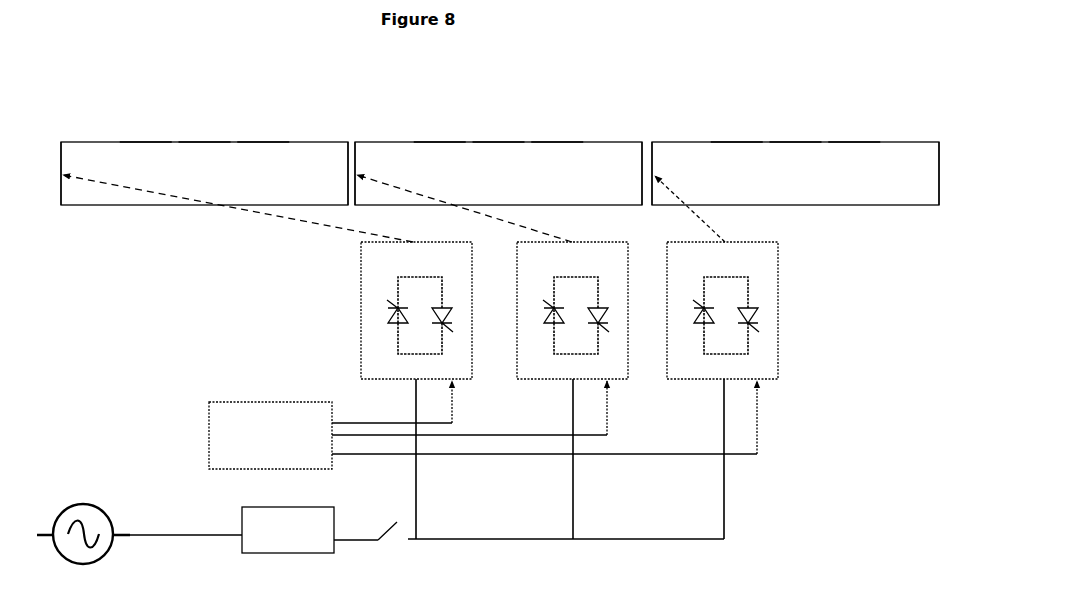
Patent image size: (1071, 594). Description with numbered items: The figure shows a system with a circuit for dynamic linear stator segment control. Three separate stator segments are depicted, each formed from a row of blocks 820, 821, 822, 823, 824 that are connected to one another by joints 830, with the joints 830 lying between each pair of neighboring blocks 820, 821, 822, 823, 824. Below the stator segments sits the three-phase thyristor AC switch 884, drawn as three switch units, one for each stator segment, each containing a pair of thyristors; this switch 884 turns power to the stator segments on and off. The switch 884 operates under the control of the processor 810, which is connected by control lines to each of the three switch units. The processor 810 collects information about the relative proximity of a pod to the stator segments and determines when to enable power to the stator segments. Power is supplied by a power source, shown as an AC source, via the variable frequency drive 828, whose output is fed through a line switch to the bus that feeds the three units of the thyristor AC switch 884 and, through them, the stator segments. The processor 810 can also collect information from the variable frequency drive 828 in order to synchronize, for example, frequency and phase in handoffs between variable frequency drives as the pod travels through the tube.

The block 820 is at (382, 173).
The block 821 is at (441, 173).
The block 822 is at (500, 173).
The block 823 is at (558, 173).
The block 824 is at (617, 173).
The joints 830 is at (500, 124).
The three-phase thyristor AC switch 884 is at (420, 277).
The processor 810 is at (483, 425).
The variable frequency drive 828 is at (288, 530).